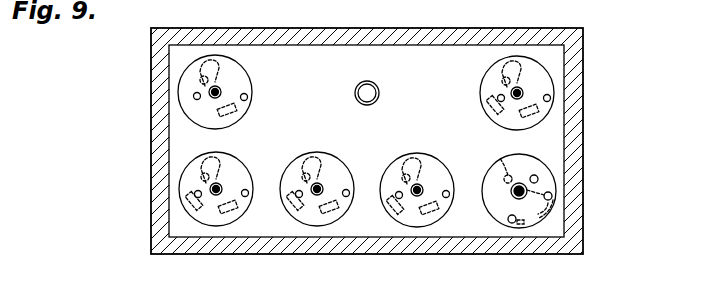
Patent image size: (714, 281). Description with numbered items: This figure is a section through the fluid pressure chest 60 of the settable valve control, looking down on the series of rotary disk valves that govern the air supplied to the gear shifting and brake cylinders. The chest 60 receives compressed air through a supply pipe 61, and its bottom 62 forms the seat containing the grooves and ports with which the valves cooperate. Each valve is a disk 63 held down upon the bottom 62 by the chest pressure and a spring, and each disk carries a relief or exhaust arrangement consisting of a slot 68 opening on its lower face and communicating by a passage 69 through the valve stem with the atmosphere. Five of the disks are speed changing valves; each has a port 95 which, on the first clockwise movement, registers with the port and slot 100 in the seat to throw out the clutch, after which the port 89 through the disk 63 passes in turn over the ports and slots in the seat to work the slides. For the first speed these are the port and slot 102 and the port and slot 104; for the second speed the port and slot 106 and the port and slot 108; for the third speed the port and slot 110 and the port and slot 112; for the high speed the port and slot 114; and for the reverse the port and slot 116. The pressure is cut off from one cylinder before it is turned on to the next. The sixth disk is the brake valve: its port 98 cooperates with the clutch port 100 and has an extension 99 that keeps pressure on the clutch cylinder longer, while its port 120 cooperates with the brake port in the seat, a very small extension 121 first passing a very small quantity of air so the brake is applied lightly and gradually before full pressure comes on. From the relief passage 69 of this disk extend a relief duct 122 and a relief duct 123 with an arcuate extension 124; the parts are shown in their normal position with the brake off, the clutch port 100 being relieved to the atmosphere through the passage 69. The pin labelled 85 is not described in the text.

The fluid pressure chest 60 is at (583, 190).
The supply pipe 61 is at (375, 86).
The bottom of the chest 62 is at (592, 128).
The valve disk 63 is at (242, 78).
The relief slot 68 is at (218, 53).
The relief passage 69 is at (212, 97).
The pin 85 is at (248, 97).
The valve port 89 is at (551, 97).
The valve port 95 is at (193, 96).
The brake valve port 98 is at (536, 176).
The port extension 99 is at (552, 196).
The clutch port and slot 100 is at (197, 83).
The port and slot 102 is at (440, 215).
The port and slot 104 is at (392, 205).
The port and slot 106 is at (340, 218).
The port and slot 108 is at (242, 205).
The port and slot 110 is at (232, 220).
The port and slot 112 is at (184, 207).
The port and slot 114 is at (238, 110).
The port and slot 116 is at (550, 110).
The brake valve port 120 is at (512, 223).
The small extension 121 is at (523, 225).
The relief duct 122 is at (515, 172).
The relief duct 123 is at (556, 205).
The arcuate extension 124 is at (548, 215).